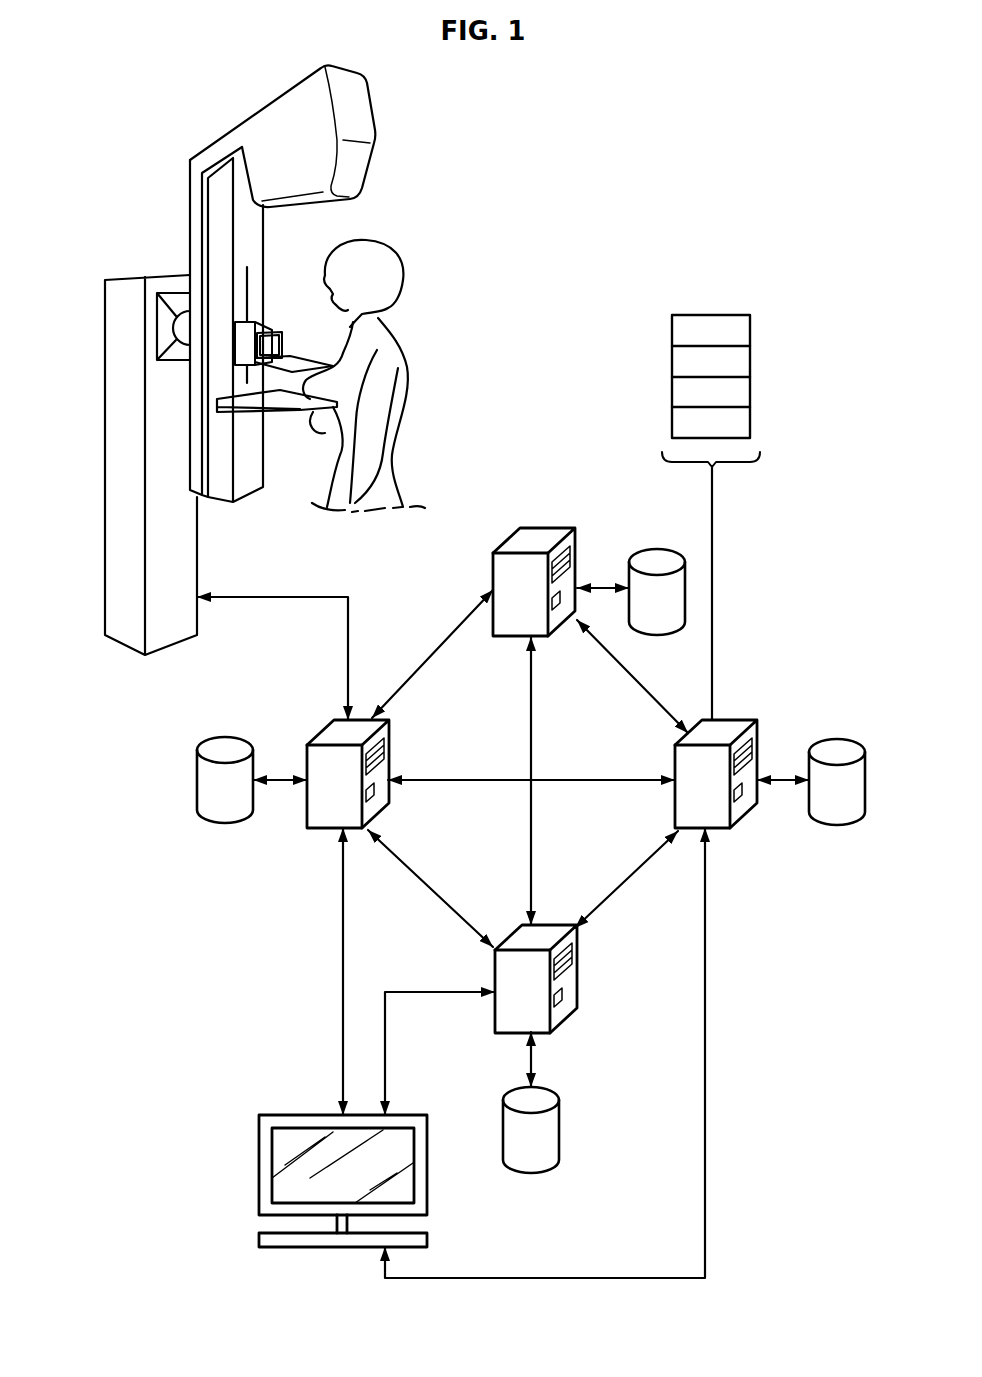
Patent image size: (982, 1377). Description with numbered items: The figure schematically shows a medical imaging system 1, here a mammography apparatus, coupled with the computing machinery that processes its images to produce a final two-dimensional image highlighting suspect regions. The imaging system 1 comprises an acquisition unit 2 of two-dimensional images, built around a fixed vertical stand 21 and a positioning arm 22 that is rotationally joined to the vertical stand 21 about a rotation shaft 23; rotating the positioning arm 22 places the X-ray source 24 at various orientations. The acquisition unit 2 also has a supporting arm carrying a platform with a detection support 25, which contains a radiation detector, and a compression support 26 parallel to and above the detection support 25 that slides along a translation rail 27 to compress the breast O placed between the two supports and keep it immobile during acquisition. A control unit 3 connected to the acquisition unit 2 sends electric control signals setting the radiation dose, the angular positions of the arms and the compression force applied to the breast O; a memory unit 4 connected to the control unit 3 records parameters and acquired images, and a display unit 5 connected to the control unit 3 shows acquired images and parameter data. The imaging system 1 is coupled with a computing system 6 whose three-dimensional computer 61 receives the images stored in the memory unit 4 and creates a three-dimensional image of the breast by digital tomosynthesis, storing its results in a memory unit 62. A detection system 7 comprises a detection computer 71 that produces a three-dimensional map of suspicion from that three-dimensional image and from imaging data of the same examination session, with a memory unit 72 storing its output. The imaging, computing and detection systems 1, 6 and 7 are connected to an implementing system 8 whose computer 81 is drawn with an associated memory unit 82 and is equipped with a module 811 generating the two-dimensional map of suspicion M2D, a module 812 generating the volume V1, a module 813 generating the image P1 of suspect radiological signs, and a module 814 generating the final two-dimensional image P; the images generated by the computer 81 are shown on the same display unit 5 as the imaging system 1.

The medical imaging system 1 is at (160, 712).
The acquisition unit 2 is at (138, 162).
The vertical stand 21 is at (120, 453).
The positioning arm 22 is at (197, 217).
The rotation shaft 23 is at (173, 327).
The radiation source 24 is at (290, 146).
The detection support 25 is at (280, 413).
The compression support 26 is at (293, 357).
The translation rail 27 is at (253, 293).
The tissue matrix (breast) O is at (310, 412).
The control unit 3 is at (390, 735).
The memory unit 4 is at (225, 812).
The display unit 5 is at (308, 1115).
The computing system 6 is at (618, 1068).
The 3D computer 61 is at (580, 988).
The memory unit 62 is at (531, 1160).
The detection system 7 is at (575, 490).
The detection computer 71 is at (577, 543).
The memory unit 72 is at (657, 622).
The implementing system 8 is at (835, 680).
The computer 81 is at (758, 735).
The database storage 82 is at (837, 812).
The module to generate a 2D map of suspicion 811 is at (753, 332).
The module to generate a volume 812 is at (753, 362).
The module to generate an image of suspect radiological signs 813 is at (753, 393).
The module to generate a final 2D image 814 is at (753, 423).